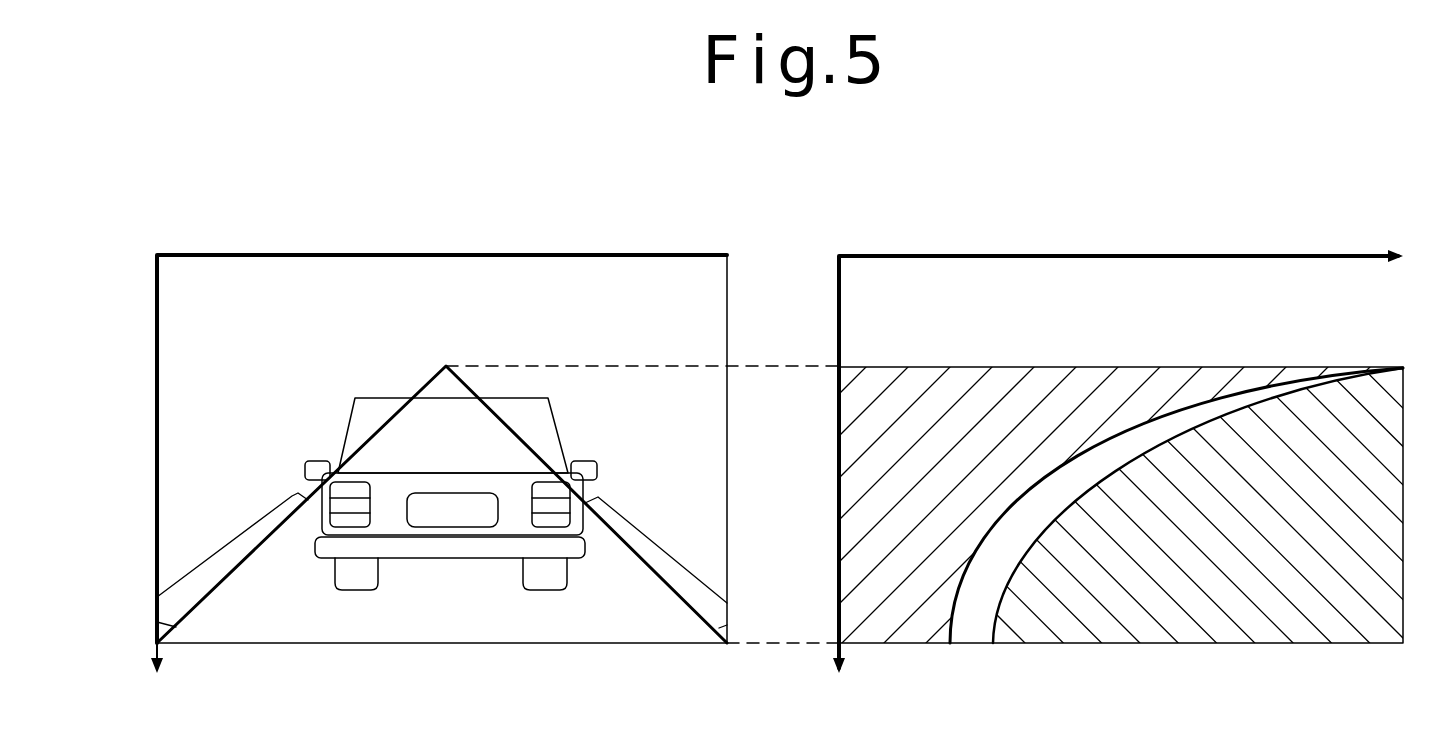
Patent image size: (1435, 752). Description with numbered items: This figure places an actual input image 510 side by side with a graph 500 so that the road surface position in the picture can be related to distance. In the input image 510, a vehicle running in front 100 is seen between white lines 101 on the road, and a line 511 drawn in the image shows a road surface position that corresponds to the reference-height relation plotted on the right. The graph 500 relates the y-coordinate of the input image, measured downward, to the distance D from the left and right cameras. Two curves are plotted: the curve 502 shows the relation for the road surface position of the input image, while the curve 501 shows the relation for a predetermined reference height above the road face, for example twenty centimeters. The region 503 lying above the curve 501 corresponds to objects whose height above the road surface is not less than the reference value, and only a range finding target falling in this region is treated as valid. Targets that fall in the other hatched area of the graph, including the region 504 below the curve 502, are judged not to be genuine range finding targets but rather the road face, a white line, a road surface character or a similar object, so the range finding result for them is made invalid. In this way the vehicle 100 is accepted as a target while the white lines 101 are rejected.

The vehicle running in front 100 is at (447, 557).
The white line on a road 101 is at (218, 553).
The graph 500 is at (1092, 236).
The curve showing a predetermined height from the road face 501 is at (955, 612).
The curve showing a road surface position 502 is at (993, 603).
The region corresponding to an object of sufficient height 503 is at (990, 378).
The lower hatched region 504 is at (1180, 625).
The input image 510 is at (492, 236).
The line showing a road surface position 511 is at (420, 392).